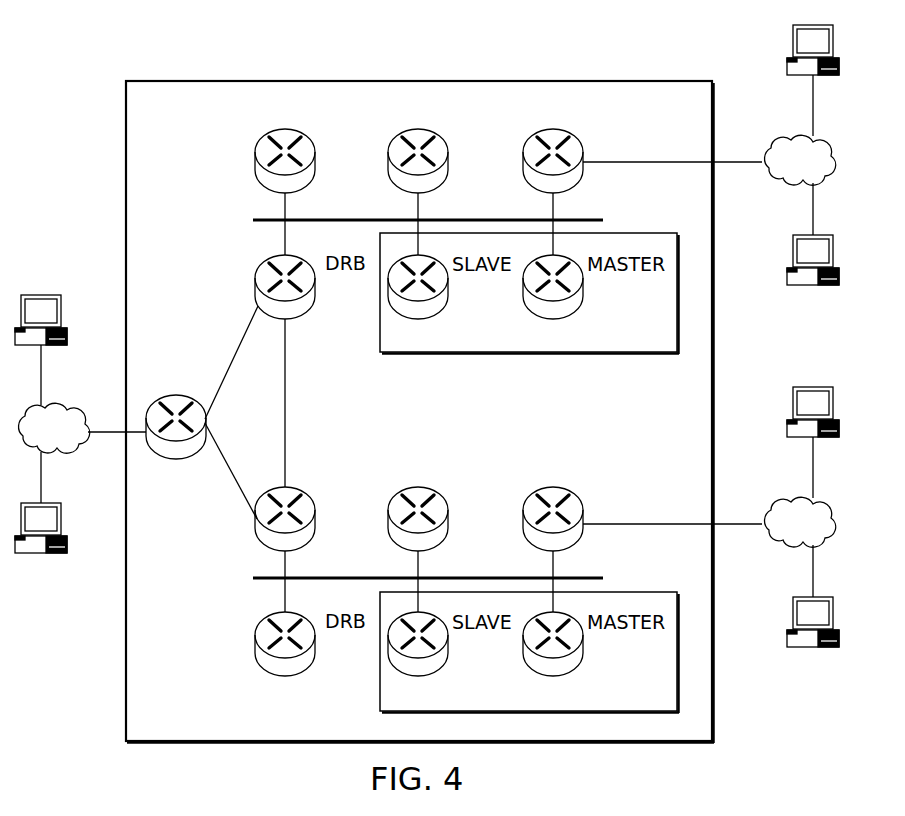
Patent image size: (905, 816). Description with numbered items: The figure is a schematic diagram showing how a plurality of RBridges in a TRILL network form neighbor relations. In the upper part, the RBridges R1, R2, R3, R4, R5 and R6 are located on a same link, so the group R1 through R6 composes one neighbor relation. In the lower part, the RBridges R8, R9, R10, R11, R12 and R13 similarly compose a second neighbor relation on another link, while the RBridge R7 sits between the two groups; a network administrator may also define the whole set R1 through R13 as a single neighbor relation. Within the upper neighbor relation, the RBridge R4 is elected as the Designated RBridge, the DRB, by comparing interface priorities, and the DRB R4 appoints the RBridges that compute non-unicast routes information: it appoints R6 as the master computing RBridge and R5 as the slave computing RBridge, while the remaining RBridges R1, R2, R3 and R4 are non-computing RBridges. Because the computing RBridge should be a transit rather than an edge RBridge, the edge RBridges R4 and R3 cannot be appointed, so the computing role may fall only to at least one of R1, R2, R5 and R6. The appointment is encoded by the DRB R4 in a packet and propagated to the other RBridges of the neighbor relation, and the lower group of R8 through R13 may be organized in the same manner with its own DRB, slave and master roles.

The RBridge R1 is at (288, 150).
The RBridge R2 is at (420, 150).
The RBridge R3 is at (553, 149).
The Designated RBridge (DRB) R4 is at (288, 301).
The slave computing RBridge R5 is at (418, 301).
The master computing RBridge R6 is at (553, 301).
The RBridge R7 is at (179, 414).
The RBridge R8 is at (288, 507).
The RBridge R9 is at (420, 507).
The RBridge R10 is at (560, 507).
The RBridge R11 is at (285, 658).
The RBridge R12 is at (418, 659).
The RBridge R13 is at (553, 659).